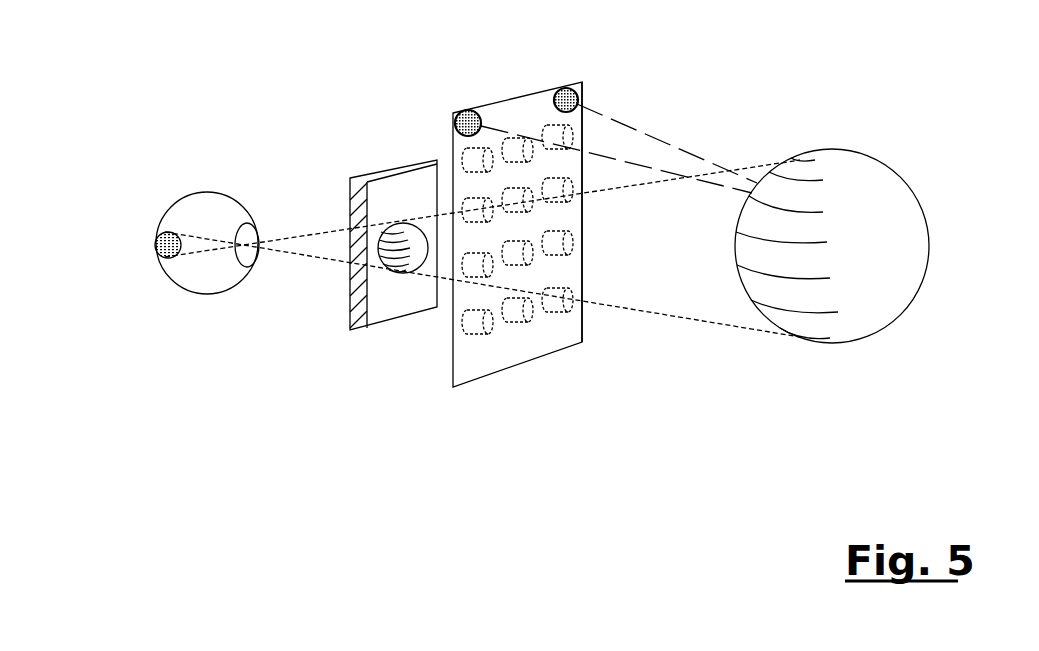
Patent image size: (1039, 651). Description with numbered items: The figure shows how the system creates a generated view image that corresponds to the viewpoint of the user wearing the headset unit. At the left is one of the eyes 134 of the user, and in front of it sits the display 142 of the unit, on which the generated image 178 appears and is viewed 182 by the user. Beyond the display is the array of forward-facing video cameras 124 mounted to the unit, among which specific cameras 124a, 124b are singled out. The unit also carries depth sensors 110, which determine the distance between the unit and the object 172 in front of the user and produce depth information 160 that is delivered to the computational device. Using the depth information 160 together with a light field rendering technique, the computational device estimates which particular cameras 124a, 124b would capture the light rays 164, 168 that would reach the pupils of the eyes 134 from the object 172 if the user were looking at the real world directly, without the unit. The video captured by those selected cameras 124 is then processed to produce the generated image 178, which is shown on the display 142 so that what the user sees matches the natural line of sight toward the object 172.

The depth sensors 110 is at (555, 95).
The video cameras 124 is at (457, 345).
The camera 124a is at (553, 315).
The camera 124b is at (578, 207).
The eyes 134 is at (200, 294).
The display 142 is at (385, 310).
The depth information 160 is at (619, 116).
The light ray 164 is at (782, 155).
The light ray 168 is at (692, 320).
The object 172 is at (865, 325).
The generated image 178 is at (400, 226).
The viewing 182 is at (160, 236).